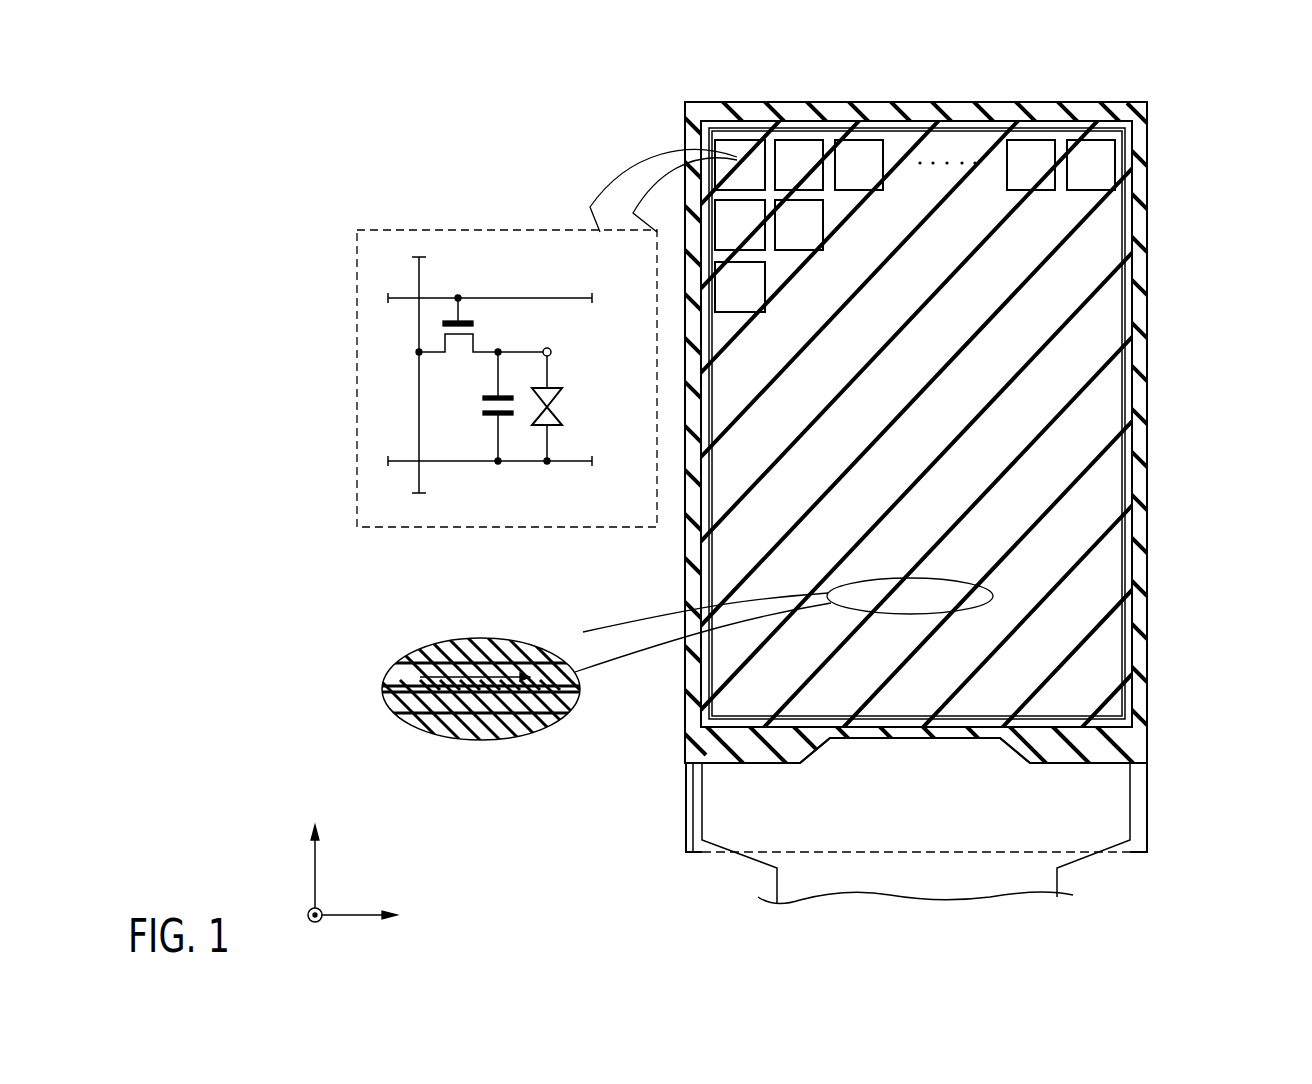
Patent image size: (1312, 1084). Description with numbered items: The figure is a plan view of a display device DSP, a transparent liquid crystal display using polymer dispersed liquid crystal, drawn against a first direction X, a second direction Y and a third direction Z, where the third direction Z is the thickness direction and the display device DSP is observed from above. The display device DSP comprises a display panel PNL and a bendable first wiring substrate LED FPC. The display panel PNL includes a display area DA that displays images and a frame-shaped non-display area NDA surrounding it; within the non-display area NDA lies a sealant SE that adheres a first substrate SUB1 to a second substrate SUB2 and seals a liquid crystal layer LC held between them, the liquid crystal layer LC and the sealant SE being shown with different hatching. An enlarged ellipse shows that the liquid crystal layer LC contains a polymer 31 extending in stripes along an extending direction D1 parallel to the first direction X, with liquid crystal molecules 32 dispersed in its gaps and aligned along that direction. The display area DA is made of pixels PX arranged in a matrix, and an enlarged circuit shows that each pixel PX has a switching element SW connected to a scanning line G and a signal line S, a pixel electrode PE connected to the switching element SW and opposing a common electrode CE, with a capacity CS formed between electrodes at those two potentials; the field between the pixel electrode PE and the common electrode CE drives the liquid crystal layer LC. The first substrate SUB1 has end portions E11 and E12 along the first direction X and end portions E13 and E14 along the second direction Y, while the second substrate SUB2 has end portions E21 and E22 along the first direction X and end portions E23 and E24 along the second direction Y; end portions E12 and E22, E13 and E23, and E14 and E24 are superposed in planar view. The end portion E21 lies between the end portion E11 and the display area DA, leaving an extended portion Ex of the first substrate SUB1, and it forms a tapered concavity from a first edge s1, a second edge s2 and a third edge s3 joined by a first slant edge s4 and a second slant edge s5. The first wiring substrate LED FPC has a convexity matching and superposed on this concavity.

The display device DSP is at (1220, 151).
The display panel PNL is at (1150, 99).
The display area DA is at (1126, 269).
The non-display area NDA is at (1143, 402).
The sealant SE is at (1140, 447).
The pixel PX is at (857, 137).
The scanning line G is at (403, 297).
The signal line S is at (418, 388).
The switching element SW is at (485, 336).
The pixel electrode PE is at (550, 350).
The capacity CS is at (478, 408).
The common electrode CE is at (570, 463).
The liquid crystal layer LC is at (560, 406).
The polymer 31 is at (395, 702).
The liquid crystal molecules 32 is at (475, 708).
The extending direction D1 is at (488, 673).
The end portion E12 is at (950, 102).
The end portion E22 is at (950, 102).
The end portion E14 is at (1147, 317).
The end portion E24 is at (1147, 317).
The end portion E13 is at (686, 578).
The end portion E23 is at (686, 578).
The end portion E11 is at (710, 853).
The end portion E21 is at (693, 853).
The extended portion Ex is at (686, 806).
The first substrate SUB1 is at (1147, 800).
The second substrate SUB2 is at (1132, 753).
The first edge s1 is at (757, 765).
The second edge s2 is at (912, 740).
The third edge s3 is at (1090, 767).
The first slant edge s4 is at (813, 757).
The second slant edge s5 is at (1013, 757).
The light emitting diode LED is at (997, 890).
The flexible printed circuit FPC is at (997, 890).
The first direction X is at (369, 916).
The second direction Y is at (314, 853).
The third direction Z is at (306, 928).